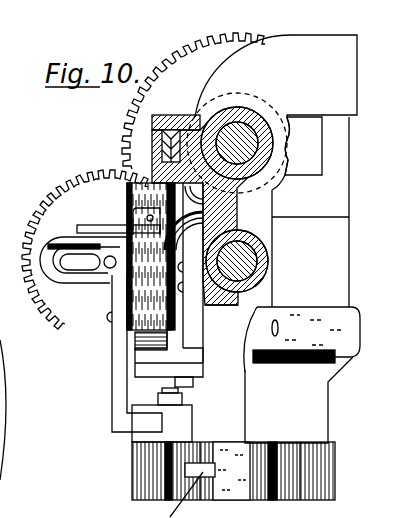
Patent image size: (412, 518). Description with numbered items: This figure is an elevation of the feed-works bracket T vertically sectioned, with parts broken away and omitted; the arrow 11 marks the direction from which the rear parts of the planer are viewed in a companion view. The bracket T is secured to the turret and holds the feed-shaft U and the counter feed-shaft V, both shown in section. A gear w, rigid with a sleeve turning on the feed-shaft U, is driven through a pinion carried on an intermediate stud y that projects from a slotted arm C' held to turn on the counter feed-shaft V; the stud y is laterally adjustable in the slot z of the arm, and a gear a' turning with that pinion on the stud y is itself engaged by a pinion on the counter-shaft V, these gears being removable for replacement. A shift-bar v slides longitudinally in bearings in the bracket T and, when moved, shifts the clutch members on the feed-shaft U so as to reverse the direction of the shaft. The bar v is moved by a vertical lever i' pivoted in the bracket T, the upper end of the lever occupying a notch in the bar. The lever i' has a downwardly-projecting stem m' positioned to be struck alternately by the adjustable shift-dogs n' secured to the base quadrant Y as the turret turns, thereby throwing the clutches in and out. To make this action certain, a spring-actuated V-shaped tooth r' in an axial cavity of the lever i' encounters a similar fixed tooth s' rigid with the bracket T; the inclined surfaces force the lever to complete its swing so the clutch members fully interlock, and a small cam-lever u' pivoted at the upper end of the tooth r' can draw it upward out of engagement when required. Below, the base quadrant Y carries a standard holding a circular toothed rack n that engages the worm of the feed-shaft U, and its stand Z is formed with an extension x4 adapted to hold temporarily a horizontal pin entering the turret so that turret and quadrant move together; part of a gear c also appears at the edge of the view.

The arrow 11 is at (68, 152).
The gear c is at (5, 399).
The gear w is at (193, 101).
The cam-lever u' is at (85, 248).
The bracket T is at (218, 330).
The circular toothed rack n is at (303, 146).
The shift-bar v is at (160, 141).
The feed-shaft U is at (234, 135).
The counter feed-shaft V is at (250, 262).
The vertical lever i' is at (151, 256).
The spring-actuated V-shaped tooth r' is at (123, 352).
The fixed tooth s' is at (141, 374).
The stem m' is at (116, 353).
The shift-dog n' is at (172, 415).
The base quadrant Y is at (157, 467).
The stand Z is at (299, 396).
The extension x4 is at (302, 316).
The gear a' is at (118, 214).
The slotted arm C' is at (85, 243).
The slot z is at (73, 270).
The intermediate stud y is at (108, 268).